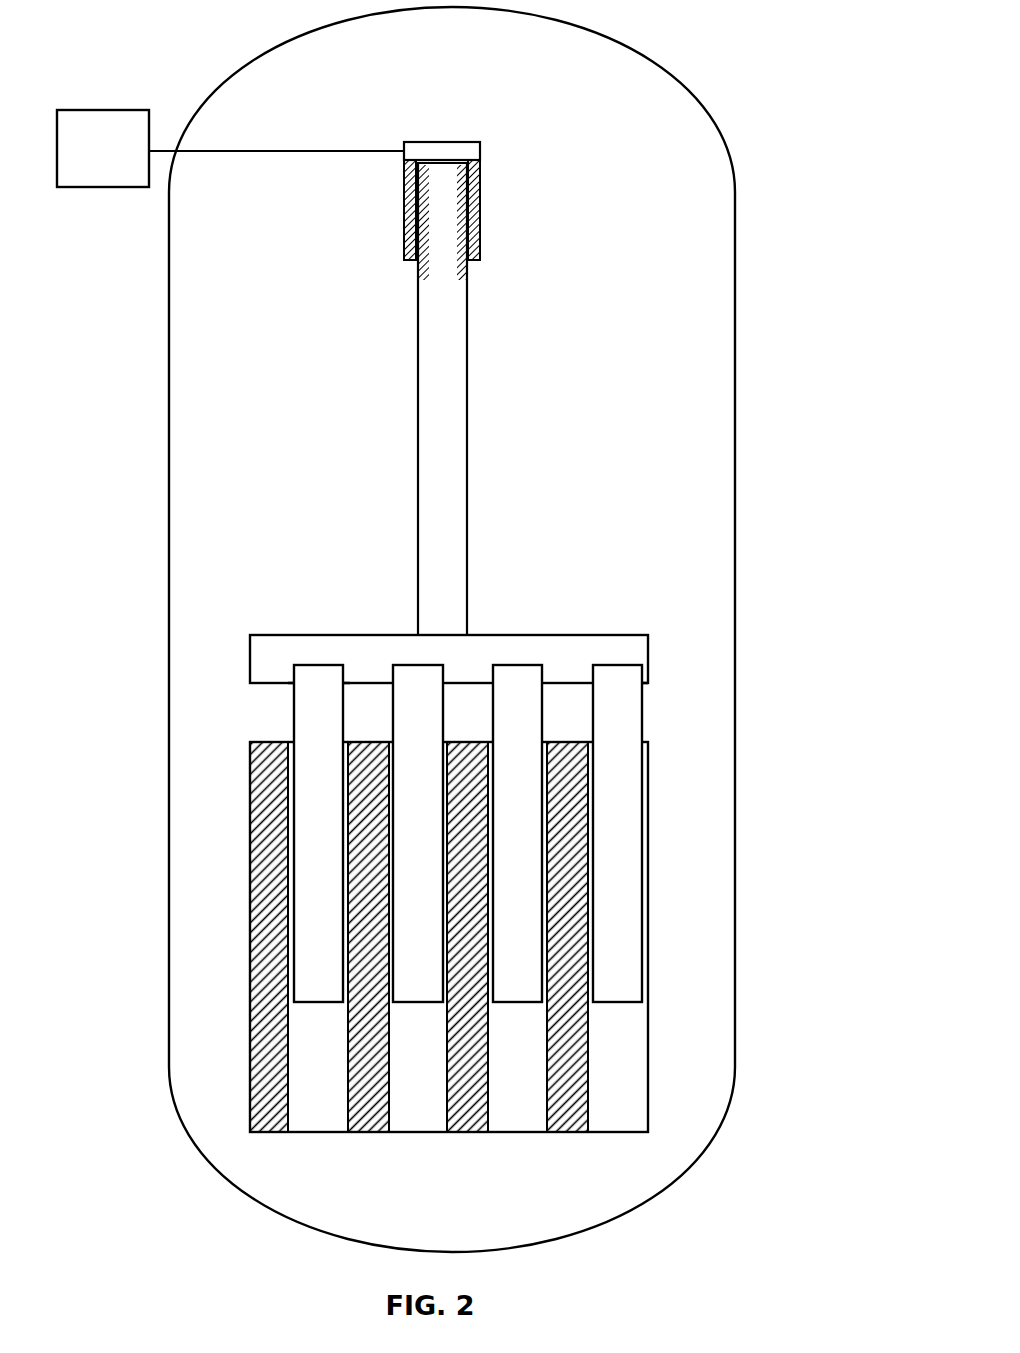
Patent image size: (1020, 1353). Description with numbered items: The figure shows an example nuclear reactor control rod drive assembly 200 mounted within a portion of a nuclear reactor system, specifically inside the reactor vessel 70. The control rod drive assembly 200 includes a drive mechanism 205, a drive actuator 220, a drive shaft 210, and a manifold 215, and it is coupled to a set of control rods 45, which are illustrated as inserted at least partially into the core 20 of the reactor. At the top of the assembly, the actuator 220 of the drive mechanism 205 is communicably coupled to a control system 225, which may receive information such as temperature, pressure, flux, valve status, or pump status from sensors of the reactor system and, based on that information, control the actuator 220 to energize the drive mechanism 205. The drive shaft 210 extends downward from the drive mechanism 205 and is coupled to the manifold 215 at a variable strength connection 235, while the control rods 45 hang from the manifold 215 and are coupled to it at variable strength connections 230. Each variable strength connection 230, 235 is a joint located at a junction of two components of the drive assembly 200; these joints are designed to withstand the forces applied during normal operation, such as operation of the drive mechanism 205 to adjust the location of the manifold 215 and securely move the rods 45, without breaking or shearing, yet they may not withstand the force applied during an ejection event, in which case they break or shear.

The core 20 is at (647, 1050).
The control rods 45 is at (293, 706).
The reactor vessel 70 is at (735, 400).
The control rod drive assembly 200 is at (462, 397).
The drive mechanism 205 is at (480, 200).
The drive shaft 210 is at (467, 312).
The manifold 215 is at (263, 635).
The drive actuator 220 is at (460, 142).
The control system 225 is at (230, 148).
The variable strength connections 230 is at (492, 684).
The variable strength connection 235 is at (467, 635).